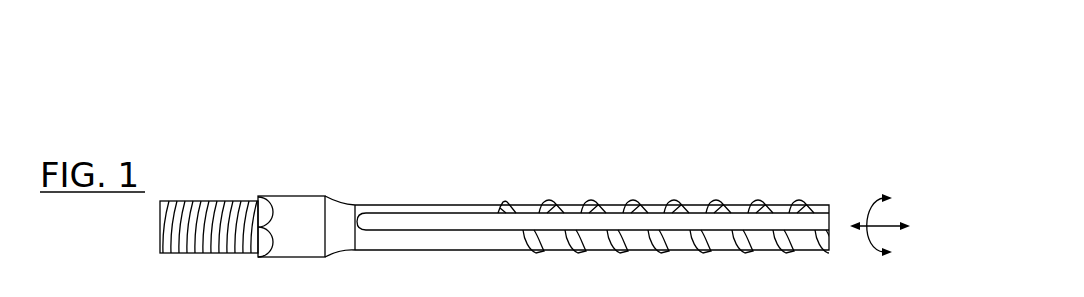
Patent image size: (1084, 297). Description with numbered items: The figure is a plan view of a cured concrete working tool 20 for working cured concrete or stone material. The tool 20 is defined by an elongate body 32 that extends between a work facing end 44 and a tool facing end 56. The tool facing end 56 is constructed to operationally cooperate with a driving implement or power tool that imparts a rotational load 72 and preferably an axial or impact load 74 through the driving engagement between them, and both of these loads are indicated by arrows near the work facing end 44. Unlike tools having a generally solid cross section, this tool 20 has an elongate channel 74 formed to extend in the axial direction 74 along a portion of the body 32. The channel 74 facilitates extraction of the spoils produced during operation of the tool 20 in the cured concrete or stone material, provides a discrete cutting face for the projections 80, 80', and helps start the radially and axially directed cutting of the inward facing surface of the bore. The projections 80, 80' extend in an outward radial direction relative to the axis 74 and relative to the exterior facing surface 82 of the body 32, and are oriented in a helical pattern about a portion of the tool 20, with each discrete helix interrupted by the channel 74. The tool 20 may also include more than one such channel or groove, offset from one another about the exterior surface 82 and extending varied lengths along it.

The cured concrete working tool 20 is at (912, 179).
The elongate body 32 is at (405, 205).
The work facing end 44 is at (823, 147).
The tool facing end 56 is at (204, 152).
The rotational load 72 is at (871, 243).
The axial load / elongate channel / axis 74 is at (484, 209).
The projection 80 is at (656, 173).
The projection 80' is at (679, 263).
The exterior facing surface 82 is at (437, 212).